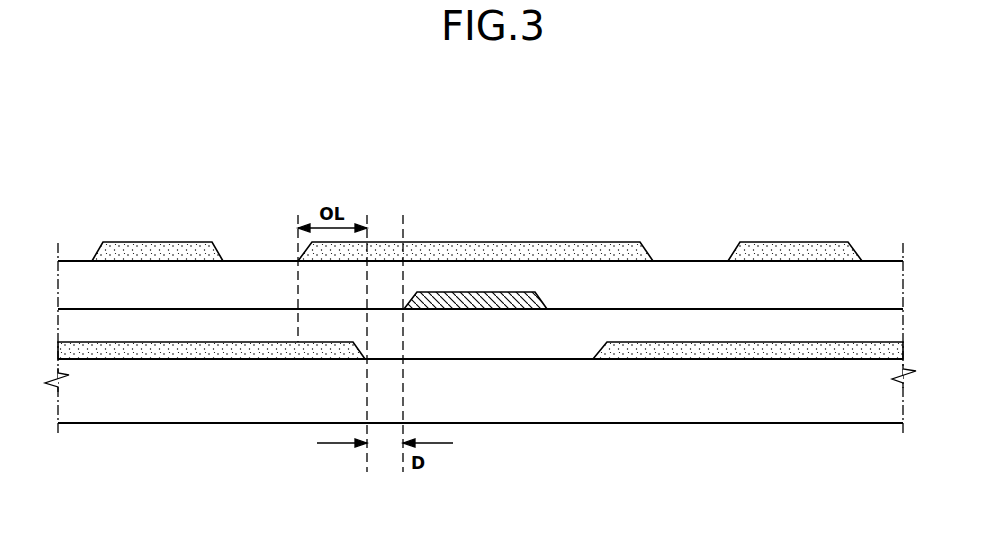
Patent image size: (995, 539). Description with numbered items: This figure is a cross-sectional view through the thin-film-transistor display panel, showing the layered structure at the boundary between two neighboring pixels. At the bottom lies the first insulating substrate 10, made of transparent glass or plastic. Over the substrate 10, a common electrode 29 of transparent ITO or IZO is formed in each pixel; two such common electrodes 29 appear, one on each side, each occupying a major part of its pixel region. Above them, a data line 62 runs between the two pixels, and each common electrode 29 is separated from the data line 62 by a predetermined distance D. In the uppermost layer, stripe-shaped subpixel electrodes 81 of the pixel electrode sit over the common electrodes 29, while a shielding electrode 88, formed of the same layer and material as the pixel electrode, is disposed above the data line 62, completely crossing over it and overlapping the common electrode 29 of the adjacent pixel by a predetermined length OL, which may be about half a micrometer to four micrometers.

The first insulating substrate 10 is at (143, 412).
The common electrode 29 is at (245, 360).
The data line 62 is at (467, 301).
The subpixel electrode 81 is at (156, 250).
The shielding electrode 88 is at (463, 250).